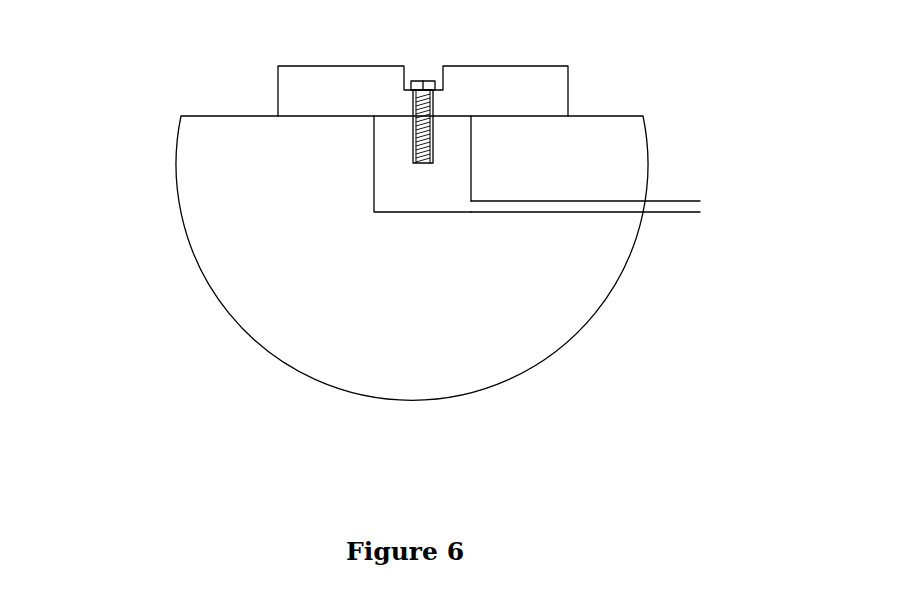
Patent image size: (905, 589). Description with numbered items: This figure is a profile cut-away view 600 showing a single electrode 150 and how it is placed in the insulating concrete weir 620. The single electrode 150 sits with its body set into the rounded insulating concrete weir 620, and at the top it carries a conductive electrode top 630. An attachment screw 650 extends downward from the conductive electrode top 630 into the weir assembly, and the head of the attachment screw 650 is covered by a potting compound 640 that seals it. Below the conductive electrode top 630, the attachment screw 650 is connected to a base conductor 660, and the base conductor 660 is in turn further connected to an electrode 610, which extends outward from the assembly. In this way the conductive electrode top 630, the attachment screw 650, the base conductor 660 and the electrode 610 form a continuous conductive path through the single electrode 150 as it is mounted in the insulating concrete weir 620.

The profile cut-away view 600 is at (638, 380).
The single electrode 150 is at (625, 115).
The electrode 610 is at (682, 207).
The insulating concrete weir 620 is at (190, 158).
The conductive electrode top 630 is at (288, 81).
The potting compound 640 is at (428, 76).
The attachment screw 650 is at (429, 122).
The base conductor 660 is at (396, 195).